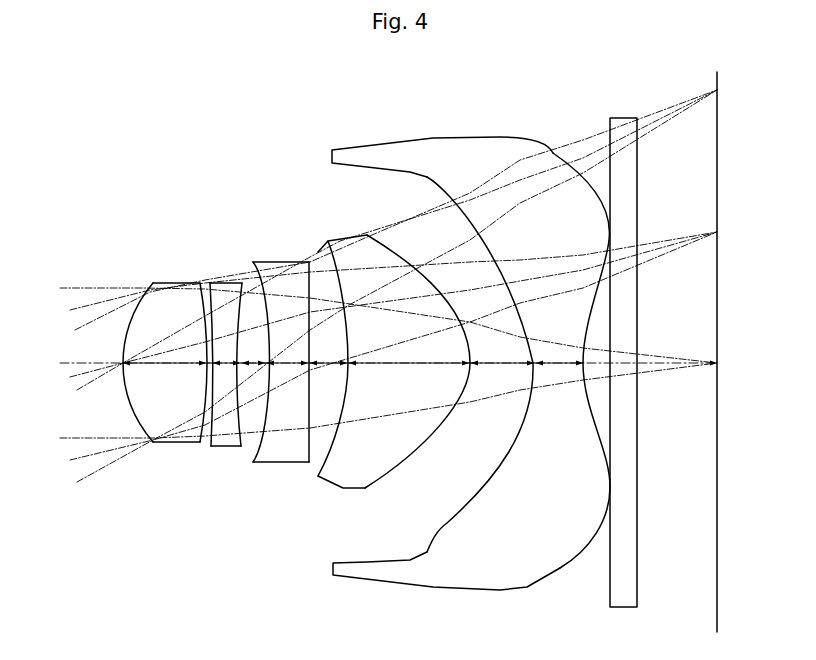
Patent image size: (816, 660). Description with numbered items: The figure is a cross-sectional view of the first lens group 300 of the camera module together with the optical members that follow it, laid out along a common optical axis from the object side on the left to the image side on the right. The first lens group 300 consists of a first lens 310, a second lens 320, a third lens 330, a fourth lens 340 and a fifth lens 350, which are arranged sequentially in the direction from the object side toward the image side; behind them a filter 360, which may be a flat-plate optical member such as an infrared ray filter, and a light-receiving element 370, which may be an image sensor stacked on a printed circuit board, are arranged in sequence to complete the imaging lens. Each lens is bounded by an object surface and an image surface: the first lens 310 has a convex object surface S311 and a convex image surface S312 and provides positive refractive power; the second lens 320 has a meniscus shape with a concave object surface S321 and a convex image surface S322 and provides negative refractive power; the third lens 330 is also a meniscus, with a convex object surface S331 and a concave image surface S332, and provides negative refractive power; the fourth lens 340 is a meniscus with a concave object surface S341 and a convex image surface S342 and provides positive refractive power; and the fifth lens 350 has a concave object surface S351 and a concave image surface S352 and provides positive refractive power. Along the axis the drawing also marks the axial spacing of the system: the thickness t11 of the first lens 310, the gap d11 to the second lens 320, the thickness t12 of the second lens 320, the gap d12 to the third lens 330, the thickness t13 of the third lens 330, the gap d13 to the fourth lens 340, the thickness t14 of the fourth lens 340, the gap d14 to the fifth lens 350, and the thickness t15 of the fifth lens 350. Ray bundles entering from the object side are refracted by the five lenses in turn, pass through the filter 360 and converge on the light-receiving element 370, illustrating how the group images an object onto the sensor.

The first lens group 300 is at (237, 151).
The first lens 310 is at (173, 445).
The second lens 320 is at (225, 449).
The third lens 330 is at (280, 465).
The fourth lens 340 is at (340, 490).
The fifth lens 350 is at (435, 591).
The filter 360 is at (637, 577).
The light-receiving element 370 is at (717, 553).
The object surface of the first lens S311 is at (126, 305).
The image surface of the first lens S312 is at (200, 276).
The object surface of the second lens S321 is at (208, 300).
The image surface of the second lens S322 is at (239, 300).
The object surface of the third lens S331 is at (257, 290).
The image surface of the third lens S332 is at (304, 270).
The object surface of the fourth lens S341 is at (336, 248).
The image surface of the fourth lens S342 is at (388, 250).
The object surface of the fifth lens S351 is at (428, 175).
The image surface of the fifth lens S352 is at (551, 150).
The thickness of first lens t11 is at (165, 355).
The distance between first and second lenses d11 is at (206, 371).
The thickness of second lens t12 is at (226, 355).
The distance between second and third lenses d12 is at (253, 355).
The thickness of third lens t13 is at (287, 355).
The distance between third and fourth lenses d13 is at (328, 355).
The thickness of fourth lens t14 is at (409, 355).
The distance between fourth and fifth lenses d14 is at (502, 355).
The thickness of fifth lens t15 is at (559, 355).